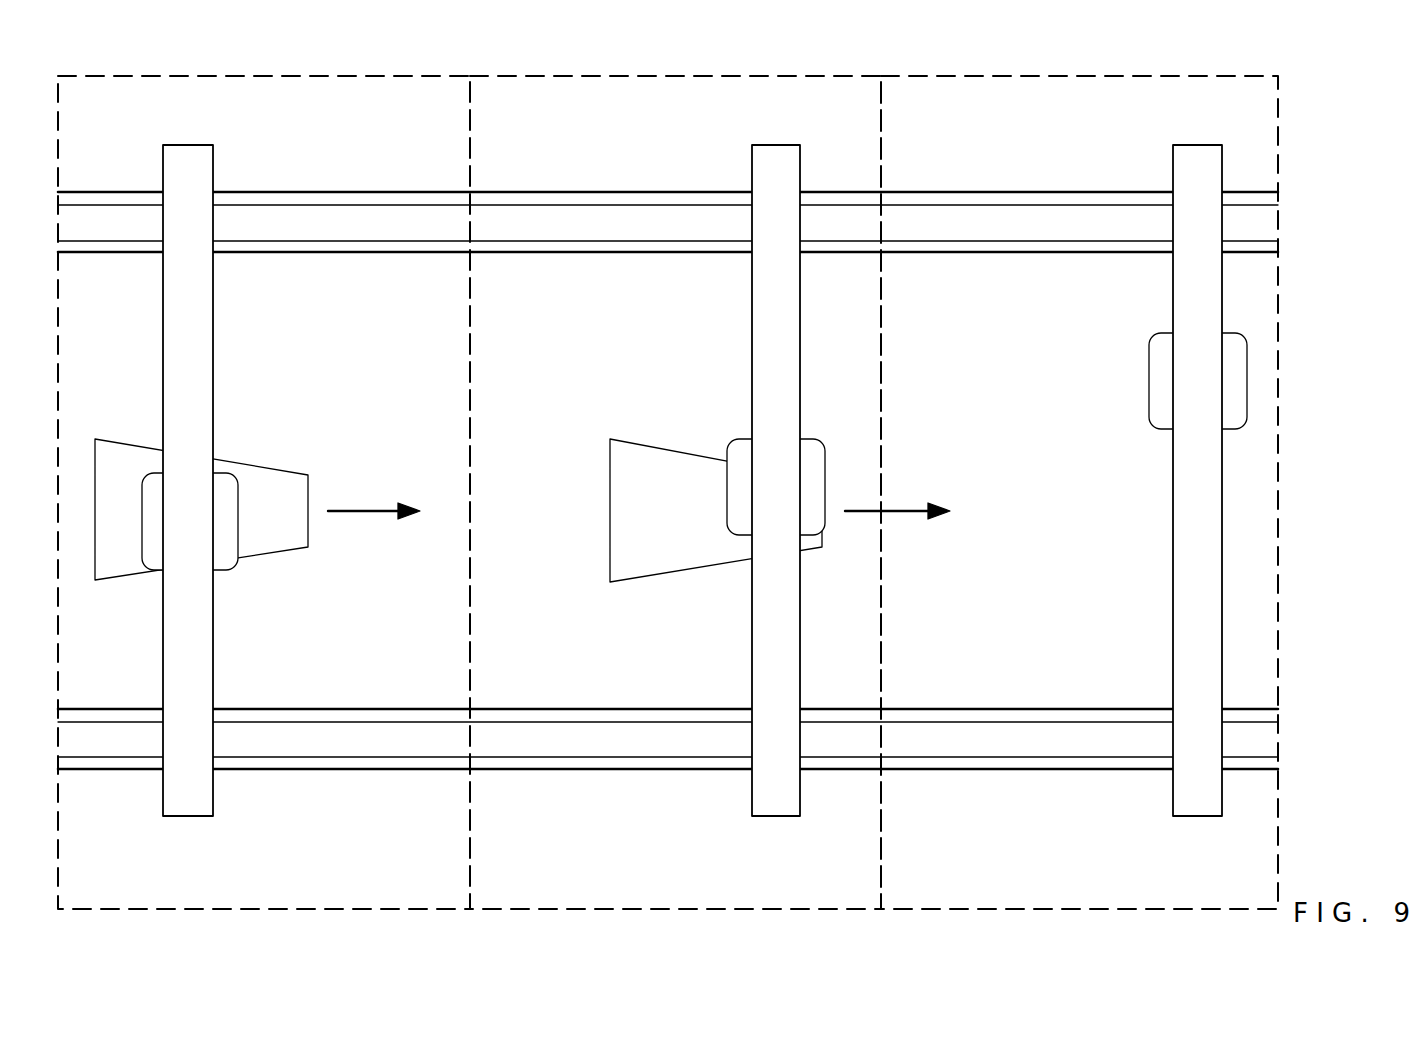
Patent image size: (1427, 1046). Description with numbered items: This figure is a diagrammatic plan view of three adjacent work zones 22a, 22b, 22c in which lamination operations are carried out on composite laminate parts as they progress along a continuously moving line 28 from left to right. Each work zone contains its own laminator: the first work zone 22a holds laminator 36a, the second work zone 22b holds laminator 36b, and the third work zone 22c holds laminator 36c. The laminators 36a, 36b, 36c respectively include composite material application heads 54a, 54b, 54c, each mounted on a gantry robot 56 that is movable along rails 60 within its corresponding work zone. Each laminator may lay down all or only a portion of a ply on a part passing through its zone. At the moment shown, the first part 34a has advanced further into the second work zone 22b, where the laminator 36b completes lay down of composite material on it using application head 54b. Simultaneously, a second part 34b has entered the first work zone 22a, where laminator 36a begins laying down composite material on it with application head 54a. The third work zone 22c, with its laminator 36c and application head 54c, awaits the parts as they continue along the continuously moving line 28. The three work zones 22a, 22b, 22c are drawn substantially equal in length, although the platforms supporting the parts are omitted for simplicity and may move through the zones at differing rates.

The first work zone 22a is at (263, 72).
The second work zone 22b is at (655, 72).
The third work zone 22c is at (1075, 72).
The continuously moving line 28 is at (365, 507).
The first part 34a is at (672, 449).
The second part 34b is at (131, 581).
The first laminator 36a is at (305, 157).
The second laminator 36b is at (657, 158).
The third laminator 36c is at (1068, 158).
The first composite material application head 54a is at (155, 472).
The second composite material application head 54b is at (812, 438).
The third composite material application head 54c is at (1148, 383).
The gantry robot 56 is at (188, 144).
The rails 60 is at (107, 191).